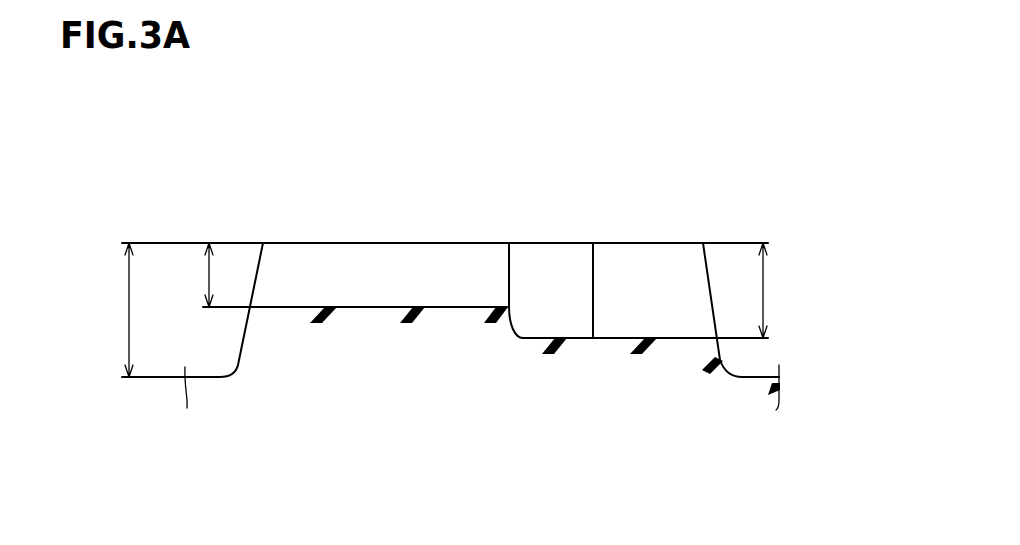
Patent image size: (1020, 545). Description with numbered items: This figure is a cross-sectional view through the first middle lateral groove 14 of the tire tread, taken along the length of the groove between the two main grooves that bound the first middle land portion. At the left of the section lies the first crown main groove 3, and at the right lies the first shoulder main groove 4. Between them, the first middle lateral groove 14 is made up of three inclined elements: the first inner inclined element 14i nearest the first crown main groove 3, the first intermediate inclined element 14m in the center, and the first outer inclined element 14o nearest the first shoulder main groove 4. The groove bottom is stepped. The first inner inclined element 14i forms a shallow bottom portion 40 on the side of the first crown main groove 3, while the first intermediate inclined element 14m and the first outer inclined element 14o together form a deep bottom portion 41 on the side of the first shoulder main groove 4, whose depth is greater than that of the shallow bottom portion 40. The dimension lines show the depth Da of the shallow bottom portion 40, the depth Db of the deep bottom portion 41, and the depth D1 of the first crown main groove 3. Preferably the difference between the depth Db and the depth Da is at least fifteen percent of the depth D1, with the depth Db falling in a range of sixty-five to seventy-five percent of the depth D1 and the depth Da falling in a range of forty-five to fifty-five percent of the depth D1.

The first middle lateral groove 14 is at (645, 147).
The first inner inclined element 14i is at (413, 277).
The first intermediate inclined element 14m is at (551, 285).
The first outer inclined element 14o is at (651, 283).
The first crown main groove 3 is at (228, 377).
The shallow bottom portion 40 is at (355, 307).
The deep bottom portion 41 is at (538, 338).
The first shoulder main groove 4 is at (727, 377).
The depth of the crown main groove D1 is at (110, 310).
The depth of the shallow bottom portion Da is at (190, 275).
The depth of the deep bottom portion Db is at (785, 290).